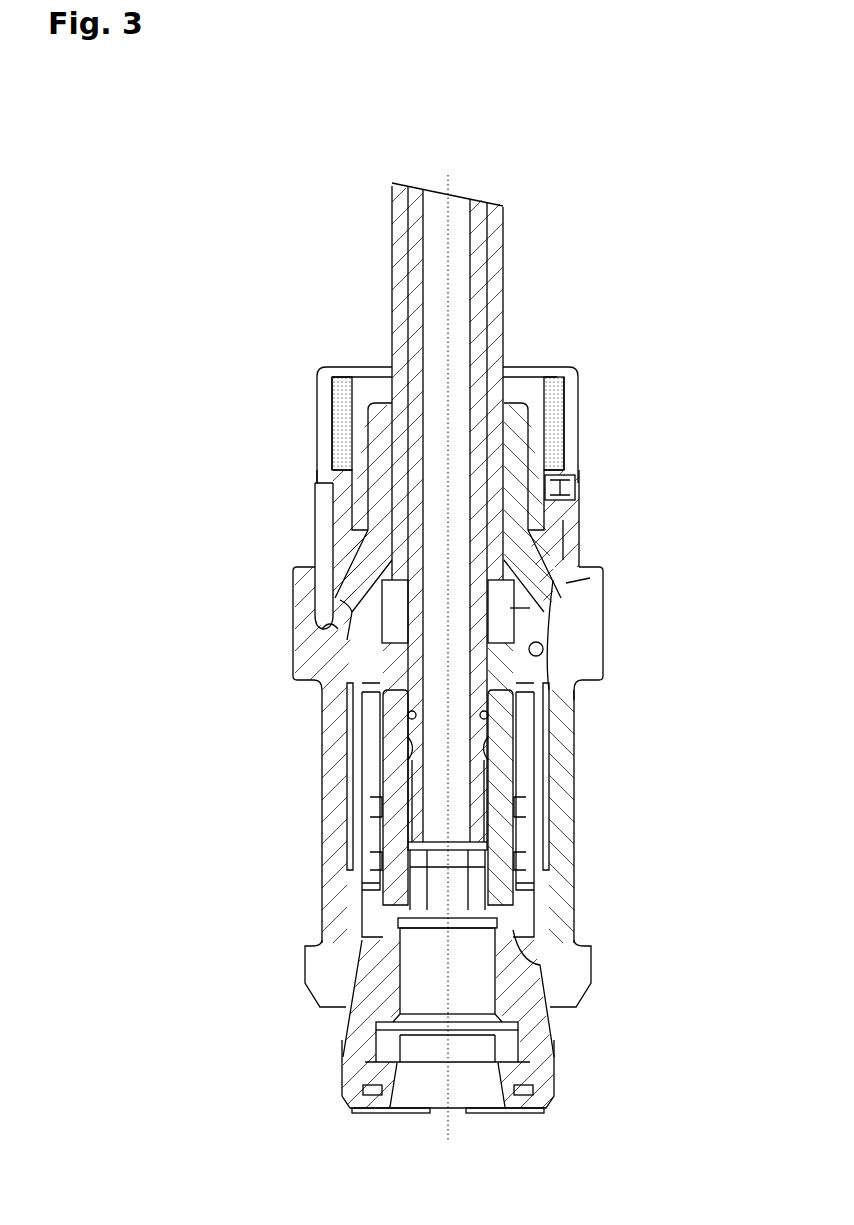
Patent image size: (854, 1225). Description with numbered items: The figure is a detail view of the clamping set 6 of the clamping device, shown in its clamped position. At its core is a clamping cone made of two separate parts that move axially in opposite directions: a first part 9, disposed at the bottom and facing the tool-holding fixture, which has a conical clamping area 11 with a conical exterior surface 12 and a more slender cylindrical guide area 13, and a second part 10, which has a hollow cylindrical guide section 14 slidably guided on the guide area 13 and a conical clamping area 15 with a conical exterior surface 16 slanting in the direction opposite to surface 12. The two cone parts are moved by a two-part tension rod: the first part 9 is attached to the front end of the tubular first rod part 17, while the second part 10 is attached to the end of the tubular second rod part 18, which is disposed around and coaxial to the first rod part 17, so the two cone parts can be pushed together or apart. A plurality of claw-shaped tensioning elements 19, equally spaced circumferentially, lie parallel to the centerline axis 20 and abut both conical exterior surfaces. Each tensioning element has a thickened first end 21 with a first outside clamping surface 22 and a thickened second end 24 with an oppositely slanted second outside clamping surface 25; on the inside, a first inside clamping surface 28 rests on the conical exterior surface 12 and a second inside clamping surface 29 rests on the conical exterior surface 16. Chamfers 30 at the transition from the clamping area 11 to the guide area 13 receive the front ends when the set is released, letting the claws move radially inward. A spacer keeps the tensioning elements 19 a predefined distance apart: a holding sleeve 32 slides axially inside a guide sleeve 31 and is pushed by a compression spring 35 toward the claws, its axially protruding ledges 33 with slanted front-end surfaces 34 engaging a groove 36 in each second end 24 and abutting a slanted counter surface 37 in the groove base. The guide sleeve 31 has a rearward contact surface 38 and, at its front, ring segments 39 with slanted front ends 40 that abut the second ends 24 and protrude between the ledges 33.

The clamping set 6 is at (632, 345).
The first part of the clamping cone 9 is at (520, 920).
The second part of the clamping cone 10 is at (530, 542).
The conical clamping area 11 is at (533, 1037).
The conical exterior surface 12 is at (343, 1028).
The cylindrical guide area 13 is at (390, 790).
The hollow cylindrical guide section 14 is at (525, 822).
The conical clamping area 15 is at (530, 608).
The conical exterior surface 16 is at (352, 638).
The first rod part 17 is at (418, 312).
The second rod part 18 is at (492, 337).
The tensioning elements 19 is at (340, 855).
The centerline axis 20 is at (448, 780).
The first end 21 is at (565, 978).
The first outside clamping surface 22 is at (312, 948).
The second end 24 is at (600, 595).
The second outside clamping surface 25 is at (603, 686).
The first inside clamping surface 28 is at (395, 985).
The second inside clamping surface 29 is at (540, 655).
The chamfers 30 is at (365, 930).
The guide sleeve 31 is at (325, 432).
The holding sleeve 32 is at (340, 505).
The ledges 33 is at (330, 563).
The slanted front-end surfaces 34 is at (320, 617).
The compression spring 35 is at (560, 440).
The groove 36 is at (305, 590).
The slanted counter surface 37 is at (318, 620).
The rearward contact surface 38 is at (340, 368).
The ring segments 39 is at (575, 537).
The slanted front ends 40 is at (590, 578).